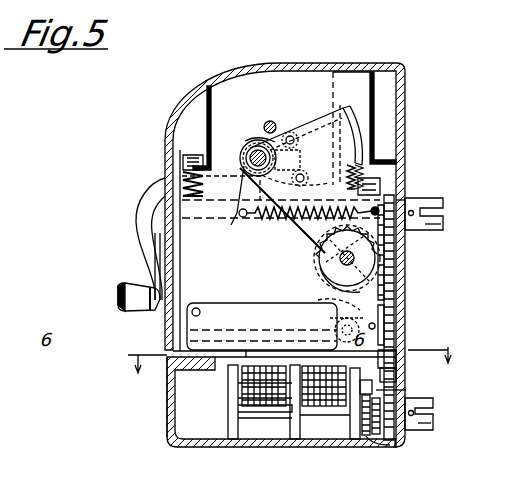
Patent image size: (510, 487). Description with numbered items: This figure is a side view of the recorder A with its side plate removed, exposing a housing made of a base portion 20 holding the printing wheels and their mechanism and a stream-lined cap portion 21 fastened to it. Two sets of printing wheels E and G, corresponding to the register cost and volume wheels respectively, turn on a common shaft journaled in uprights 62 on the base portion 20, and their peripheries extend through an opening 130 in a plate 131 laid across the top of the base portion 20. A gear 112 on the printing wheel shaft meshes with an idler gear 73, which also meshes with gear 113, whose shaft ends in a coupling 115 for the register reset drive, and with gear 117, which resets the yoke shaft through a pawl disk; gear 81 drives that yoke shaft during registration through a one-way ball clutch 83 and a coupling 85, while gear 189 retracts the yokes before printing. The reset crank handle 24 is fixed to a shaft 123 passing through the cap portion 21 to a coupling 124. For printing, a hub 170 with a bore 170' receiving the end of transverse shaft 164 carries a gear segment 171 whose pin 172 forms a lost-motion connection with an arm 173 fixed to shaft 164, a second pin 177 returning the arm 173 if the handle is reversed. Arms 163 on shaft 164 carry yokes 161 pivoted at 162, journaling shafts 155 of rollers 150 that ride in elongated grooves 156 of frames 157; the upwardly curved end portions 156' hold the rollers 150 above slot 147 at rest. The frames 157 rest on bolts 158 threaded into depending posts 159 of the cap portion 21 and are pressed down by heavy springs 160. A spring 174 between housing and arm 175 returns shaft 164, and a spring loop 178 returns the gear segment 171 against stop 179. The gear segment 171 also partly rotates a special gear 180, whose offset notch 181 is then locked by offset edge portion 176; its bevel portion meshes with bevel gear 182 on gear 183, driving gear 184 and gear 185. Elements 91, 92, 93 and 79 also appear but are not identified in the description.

The base portion 20 is at (167, 430).
The recorder A is at (204, 75).
The plate 131 is at (175, 364).
The cap portion 21 is at (196, 100).
The depending posts 159 is at (185, 115).
The bolts 158 is at (184, 167).
The springs 160 is at (184, 180).
The hub 170 is at (269, 196).
The bore 170' is at (242, 159).
The shaft 164 is at (245, 152).
The spring loop 178 is at (250, 141).
The stop 179 is at (265, 123).
The pin 172 is at (290, 132).
The pin 177 is at (300, 170).
The arm 173 is at (277, 137).
The gear segment 171 is at (352, 147).
The offset edge portion 176 is at (356, 128).
The shaft 123 is at (181, 213).
The arm 175 is at (236, 222).
The spring 174 is at (241, 235).
The arms 163 is at (286, 228).
The offset notch 181 is at (323, 249).
The gear 180 is at (320, 263).
The bevel gear 182 is at (389, 246).
The gear 183 is at (392, 263).
The pivot 162 is at (412, 296).
The gear 184 is at (394, 320).
The gear 112 is at (398, 350).
The coupling 124 is at (434, 193).
The frame 157 is at (181, 247).
The crank handle 24 is at (138, 203).
The slot 147 is at (170, 340).
The elongated grooves 156 is at (262, 318).
The upwardly curved end portion 156' is at (317, 330).
The rollers 150 is at (328, 318).
The yokes 161 is at (322, 299).
The shaft 155 is at (340, 319).
The opening 130 is at (248, 357).
The uprights 62 is at (230, 430).
The set of printing wheels G is at (262, 410).
The set of printing wheels E is at (326, 408).
The shaft 91 is at (240, 384).
The shaft 92 is at (240, 399).
The shaft 93 is at (240, 418).
The bracket 79 is at (236, 410).
The gear 81 is at (352, 428).
The gear 189 is at (366, 435).
The gear 113 is at (371, 440).
The gear 117 is at (378, 436).
The one-way drive ball clutch 83 is at (392, 440).
The idler gear 73 is at (382, 382).
The gear 185 is at (407, 390).
The coupling 85 is at (430, 401).
The coupling 115 is at (433, 424).